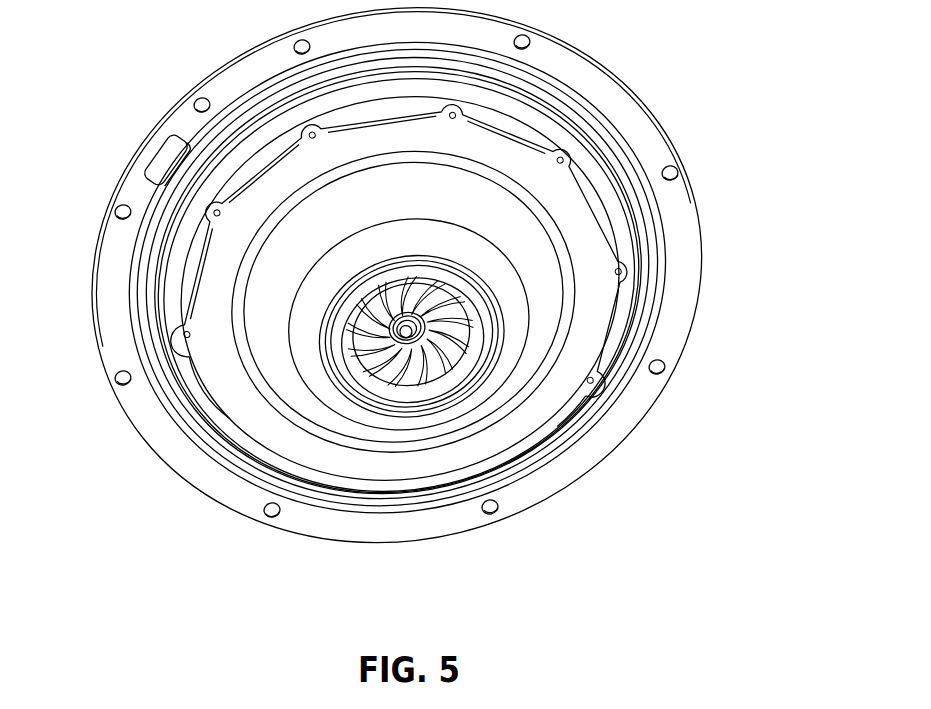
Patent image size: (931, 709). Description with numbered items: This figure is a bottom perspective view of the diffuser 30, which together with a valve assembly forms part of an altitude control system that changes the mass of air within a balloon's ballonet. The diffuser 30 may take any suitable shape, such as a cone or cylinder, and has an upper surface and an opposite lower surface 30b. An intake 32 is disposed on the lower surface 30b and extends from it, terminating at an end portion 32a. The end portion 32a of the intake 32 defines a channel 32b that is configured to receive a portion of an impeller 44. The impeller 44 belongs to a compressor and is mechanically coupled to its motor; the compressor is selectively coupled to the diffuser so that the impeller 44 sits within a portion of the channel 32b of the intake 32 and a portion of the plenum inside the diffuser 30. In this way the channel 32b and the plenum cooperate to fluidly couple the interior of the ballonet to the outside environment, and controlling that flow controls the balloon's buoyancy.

The diffuser 30 is at (397, 302).
The lower surface 30b is at (643, 127).
The intake 32 is at (403, 347).
The end portion 32a is at (492, 381).
The channel 32b is at (401, 396).
The impeller 44 is at (388, 363).